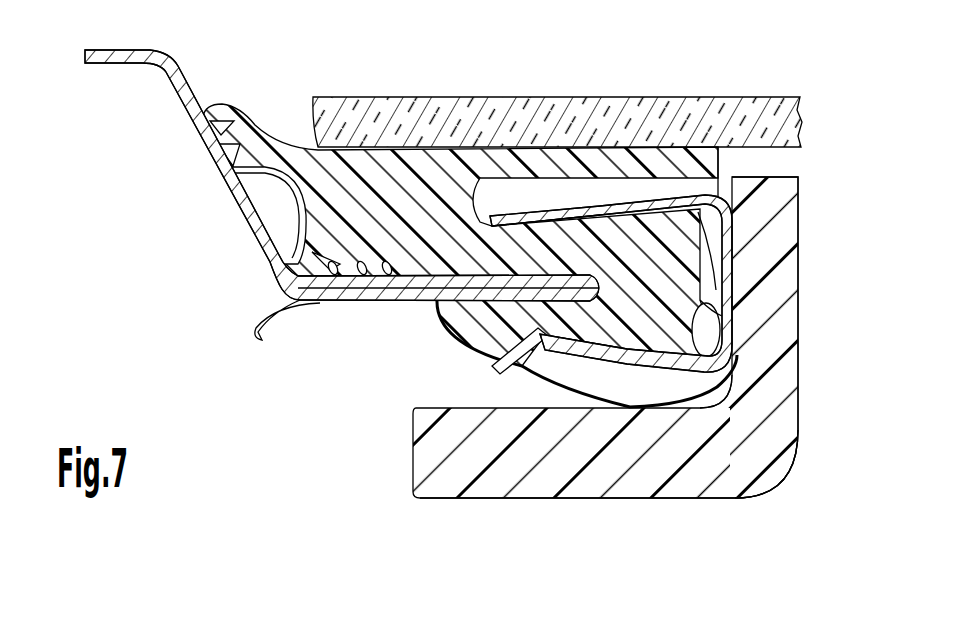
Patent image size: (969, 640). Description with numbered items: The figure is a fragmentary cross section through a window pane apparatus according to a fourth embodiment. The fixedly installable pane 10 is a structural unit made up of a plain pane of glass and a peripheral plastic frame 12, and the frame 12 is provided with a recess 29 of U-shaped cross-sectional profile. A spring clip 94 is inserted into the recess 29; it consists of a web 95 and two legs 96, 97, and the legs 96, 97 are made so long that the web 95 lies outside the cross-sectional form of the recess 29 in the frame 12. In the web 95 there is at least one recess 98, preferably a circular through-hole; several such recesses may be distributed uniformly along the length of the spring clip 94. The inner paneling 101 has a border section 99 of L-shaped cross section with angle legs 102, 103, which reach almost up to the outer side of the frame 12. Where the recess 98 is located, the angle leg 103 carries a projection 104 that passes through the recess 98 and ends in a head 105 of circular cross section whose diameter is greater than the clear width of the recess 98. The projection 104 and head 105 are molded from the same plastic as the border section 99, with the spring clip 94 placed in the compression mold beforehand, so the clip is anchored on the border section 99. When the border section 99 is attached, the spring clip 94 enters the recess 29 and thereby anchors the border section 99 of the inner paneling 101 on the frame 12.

The pane 10 is at (658, 90).
The frame 12 is at (300, 222).
The recess 29 is at (522, 190).
The spring clip 94 is at (704, 200).
The web 95 is at (737, 213).
The leg 96 is at (583, 208).
The leg 97 is at (622, 343).
The recess 98 is at (702, 273).
The border section 99 is at (733, 500).
The inner paneling 101 is at (414, 461).
The angle leg 102 is at (646, 477).
The angle leg 103 is at (780, 373).
The projection 104 is at (735, 290).
The head 105 is at (688, 312).